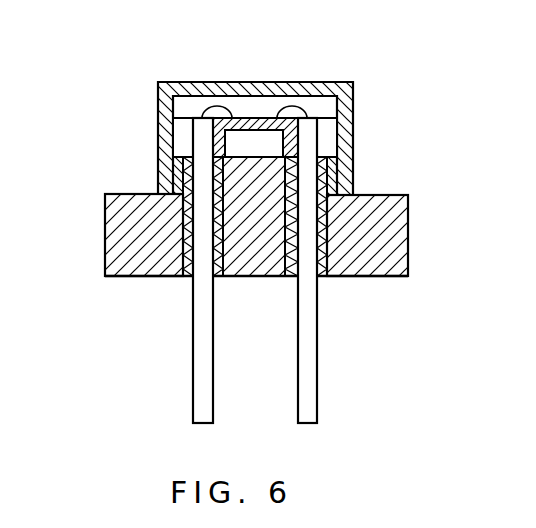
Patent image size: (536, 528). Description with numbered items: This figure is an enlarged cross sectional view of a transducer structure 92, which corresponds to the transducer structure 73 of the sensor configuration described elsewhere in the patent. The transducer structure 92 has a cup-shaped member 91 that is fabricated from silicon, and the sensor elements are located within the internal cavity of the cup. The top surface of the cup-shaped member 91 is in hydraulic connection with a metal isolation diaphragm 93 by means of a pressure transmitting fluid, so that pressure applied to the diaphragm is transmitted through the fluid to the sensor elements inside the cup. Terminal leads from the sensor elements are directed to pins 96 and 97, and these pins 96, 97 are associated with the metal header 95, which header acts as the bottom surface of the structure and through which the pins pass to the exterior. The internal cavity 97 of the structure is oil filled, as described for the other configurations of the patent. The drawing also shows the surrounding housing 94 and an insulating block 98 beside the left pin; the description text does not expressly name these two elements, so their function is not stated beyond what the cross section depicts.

The cup-shaped member 91 is at (278, 108).
The transducer structure 92 is at (218, 86).
The metal isolation diaphragm 93 is at (252, 84).
The housing 94 is at (158, 148).
The metal header 95 is at (140, 227).
The pin 96 is at (310, 338).
The pin 97 is at (323, 108).
The left insulating block 98 is at (182, 133).
The transducer structure 73 is at (373, 200).